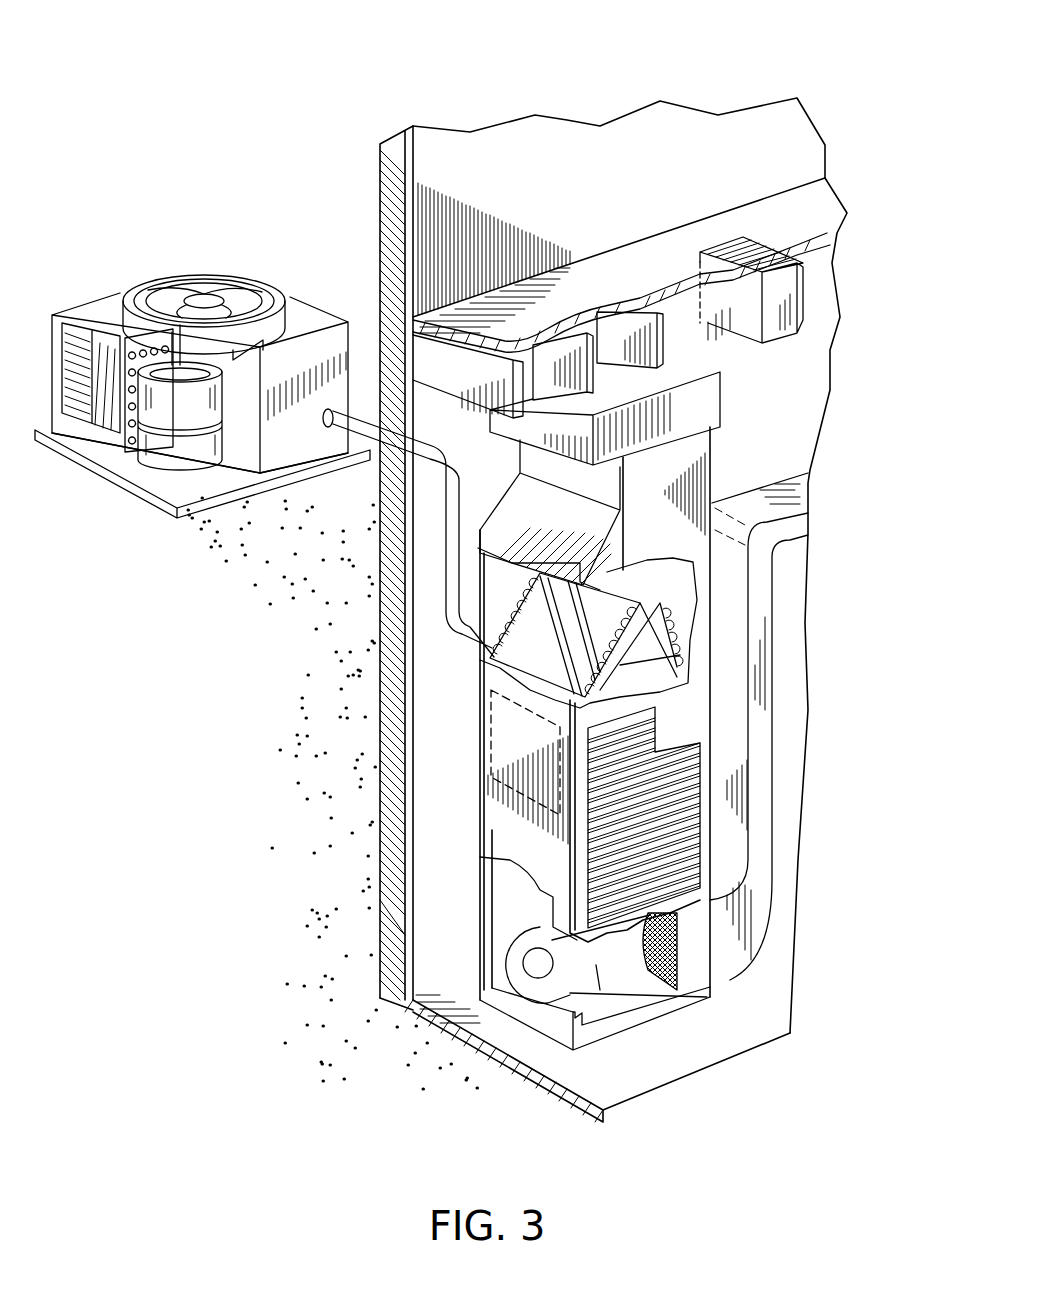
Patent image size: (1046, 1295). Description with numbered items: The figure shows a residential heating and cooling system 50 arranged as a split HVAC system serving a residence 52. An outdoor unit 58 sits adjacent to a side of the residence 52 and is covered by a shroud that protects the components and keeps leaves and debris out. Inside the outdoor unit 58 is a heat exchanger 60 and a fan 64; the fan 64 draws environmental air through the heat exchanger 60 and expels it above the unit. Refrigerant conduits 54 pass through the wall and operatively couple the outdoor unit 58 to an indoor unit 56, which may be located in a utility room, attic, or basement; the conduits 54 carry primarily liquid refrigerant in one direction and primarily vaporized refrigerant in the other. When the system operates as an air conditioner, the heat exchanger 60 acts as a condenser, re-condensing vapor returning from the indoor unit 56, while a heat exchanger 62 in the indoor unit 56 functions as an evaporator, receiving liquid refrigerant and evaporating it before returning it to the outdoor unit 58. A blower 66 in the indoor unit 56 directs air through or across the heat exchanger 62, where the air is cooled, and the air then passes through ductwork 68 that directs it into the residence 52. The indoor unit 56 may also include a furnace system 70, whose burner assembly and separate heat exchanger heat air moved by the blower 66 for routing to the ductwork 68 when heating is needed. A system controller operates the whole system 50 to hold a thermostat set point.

The residential heating and cooling system 50 is at (200, 95).
The residence 52 is at (520, 148).
The refrigerant conduits 54 is at (450, 540).
The indoor unit 56 is at (455, 795).
The outdoor unit 58 is at (158, 260).
The heat exchanger 60 is at (135, 352).
The heat exchanger 62 is at (543, 662).
The fan 64 is at (223, 277).
The blower 66 is at (530, 985).
The ductwork 68 is at (757, 383).
The furnace system 70 is at (491, 750).